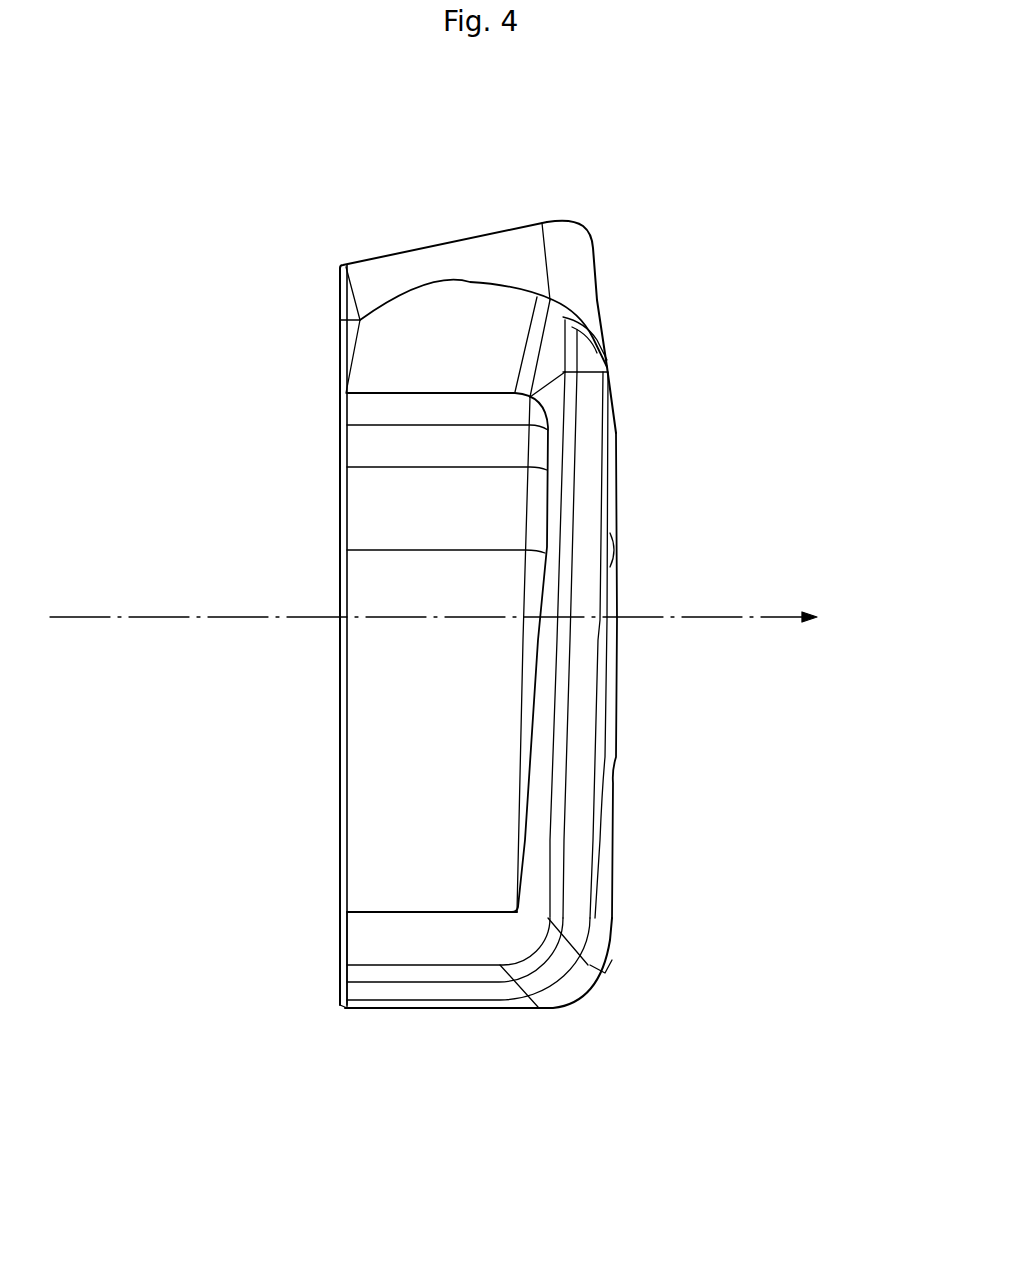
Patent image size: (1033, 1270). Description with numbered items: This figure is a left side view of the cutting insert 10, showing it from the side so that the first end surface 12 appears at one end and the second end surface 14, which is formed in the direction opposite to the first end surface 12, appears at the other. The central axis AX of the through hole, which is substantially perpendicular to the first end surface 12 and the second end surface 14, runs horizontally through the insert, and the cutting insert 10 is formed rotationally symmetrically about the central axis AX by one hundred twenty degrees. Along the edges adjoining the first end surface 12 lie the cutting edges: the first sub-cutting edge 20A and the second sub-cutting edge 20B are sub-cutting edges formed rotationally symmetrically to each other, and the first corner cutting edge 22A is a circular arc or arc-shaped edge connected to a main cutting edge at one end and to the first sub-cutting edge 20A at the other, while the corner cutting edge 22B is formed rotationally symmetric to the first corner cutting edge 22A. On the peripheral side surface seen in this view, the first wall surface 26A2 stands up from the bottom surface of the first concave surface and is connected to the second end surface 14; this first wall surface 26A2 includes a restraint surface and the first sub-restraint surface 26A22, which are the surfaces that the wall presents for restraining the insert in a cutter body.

The cutting insert 10 is at (315, 973).
The first end surface 12 is at (633, 488).
The second end surface 14 is at (327, 513).
The first sub-cutting edge 20A is at (422, 1010).
The second sub-cutting edge 20B is at (447, 244).
The first corner cutting edge 22A is at (568, 1007).
The corner cutting edge 22B is at (573, 218).
The first wall surface 26A2 is at (400, 692).
The first sub-restraint surface 26A22 is at (403, 778).
The central axis AX is at (695, 617).